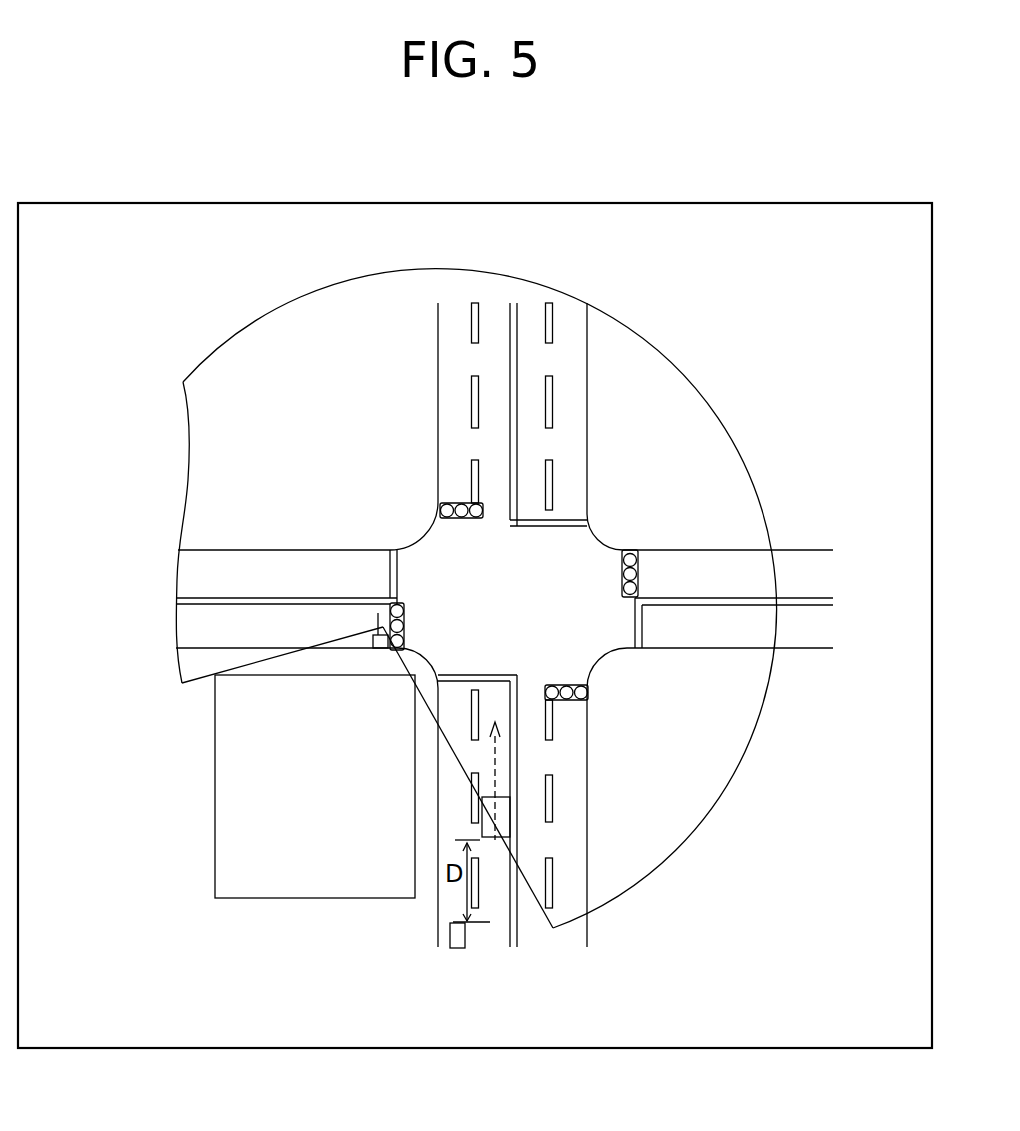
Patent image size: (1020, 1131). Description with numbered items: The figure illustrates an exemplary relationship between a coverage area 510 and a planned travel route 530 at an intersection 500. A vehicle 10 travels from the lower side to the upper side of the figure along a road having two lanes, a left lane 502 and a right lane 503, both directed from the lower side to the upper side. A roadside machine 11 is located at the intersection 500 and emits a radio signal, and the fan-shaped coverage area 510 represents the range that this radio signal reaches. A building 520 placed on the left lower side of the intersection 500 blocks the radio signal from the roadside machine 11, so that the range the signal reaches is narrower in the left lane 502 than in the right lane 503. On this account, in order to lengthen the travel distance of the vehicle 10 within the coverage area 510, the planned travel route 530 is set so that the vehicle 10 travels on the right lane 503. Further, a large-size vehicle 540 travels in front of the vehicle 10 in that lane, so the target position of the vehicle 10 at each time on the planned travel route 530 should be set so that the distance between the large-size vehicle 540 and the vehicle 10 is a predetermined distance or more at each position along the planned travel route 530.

The vehicle 10 is at (452, 950).
The roadside machine 11 is at (382, 622).
The intersection 500 is at (583, 562).
The coverage area 510 is at (642, 364).
The building 520 is at (235, 877).
The planned travel route 530 is at (495, 767).
The large-size vehicle 540 is at (514, 816).
The left lane 502 is at (442, 905).
The right lane 503 is at (493, 924).